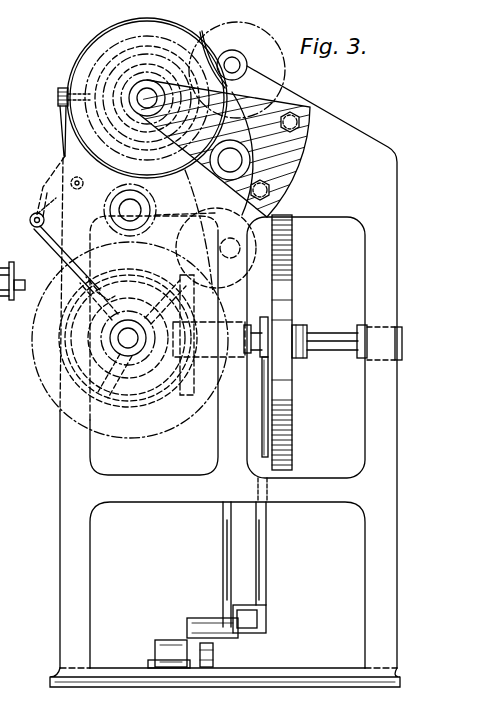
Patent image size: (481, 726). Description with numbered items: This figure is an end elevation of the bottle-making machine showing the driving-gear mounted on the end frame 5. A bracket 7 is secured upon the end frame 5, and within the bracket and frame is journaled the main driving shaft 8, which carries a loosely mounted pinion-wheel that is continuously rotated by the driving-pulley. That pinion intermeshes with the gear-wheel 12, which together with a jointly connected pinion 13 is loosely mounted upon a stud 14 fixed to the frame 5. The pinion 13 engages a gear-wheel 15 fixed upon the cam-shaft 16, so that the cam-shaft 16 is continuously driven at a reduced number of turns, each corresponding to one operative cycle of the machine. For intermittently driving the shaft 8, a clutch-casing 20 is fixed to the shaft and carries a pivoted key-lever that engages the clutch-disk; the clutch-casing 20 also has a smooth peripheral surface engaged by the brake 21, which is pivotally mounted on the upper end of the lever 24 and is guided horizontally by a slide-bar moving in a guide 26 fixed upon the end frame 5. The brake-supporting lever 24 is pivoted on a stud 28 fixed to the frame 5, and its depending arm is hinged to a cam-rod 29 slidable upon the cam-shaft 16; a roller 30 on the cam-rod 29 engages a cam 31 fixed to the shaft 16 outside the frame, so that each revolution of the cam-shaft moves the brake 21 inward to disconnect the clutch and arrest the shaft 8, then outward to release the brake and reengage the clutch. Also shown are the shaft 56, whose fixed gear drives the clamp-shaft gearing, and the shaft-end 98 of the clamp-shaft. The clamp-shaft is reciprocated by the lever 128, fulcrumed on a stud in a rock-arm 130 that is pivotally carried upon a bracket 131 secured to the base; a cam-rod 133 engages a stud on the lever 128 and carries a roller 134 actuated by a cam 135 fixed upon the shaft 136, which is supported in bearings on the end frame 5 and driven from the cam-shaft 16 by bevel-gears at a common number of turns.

The end frame 5 is at (225, 376).
The bracket 7 is at (304, 146).
The main driving shaft 8 is at (147, 90).
The gear-wheel 12 is at (46, 193).
The pinion 13 is at (154, 206).
The stud 14 is at (128, 210).
The gear-wheel 15 is at (32, 336).
The cam-shaft 16 is at (135, 340).
The clutch-casing 20 is at (147, 98).
The brake 21 is at (117, 47).
The lever 24 is at (73, 165).
The guide 26 is at (67, 89).
The stud 28 is at (70, 183).
The cam-rod 29 is at (52, 240).
The roller 30 is at (99, 302).
The cam 31 is at (68, 356).
The shaft 56 is at (233, 60).
The shaft-end 98 is at (12, 280).
The lever 128 is at (222, 551).
The rock-arm 130 is at (214, 655).
The bracket 131 is at (160, 640).
The cam-rod 133 is at (265, 566).
The roller 134 is at (268, 445).
The cam 135 is at (268, 443).
The shaft 136 is at (334, 335).